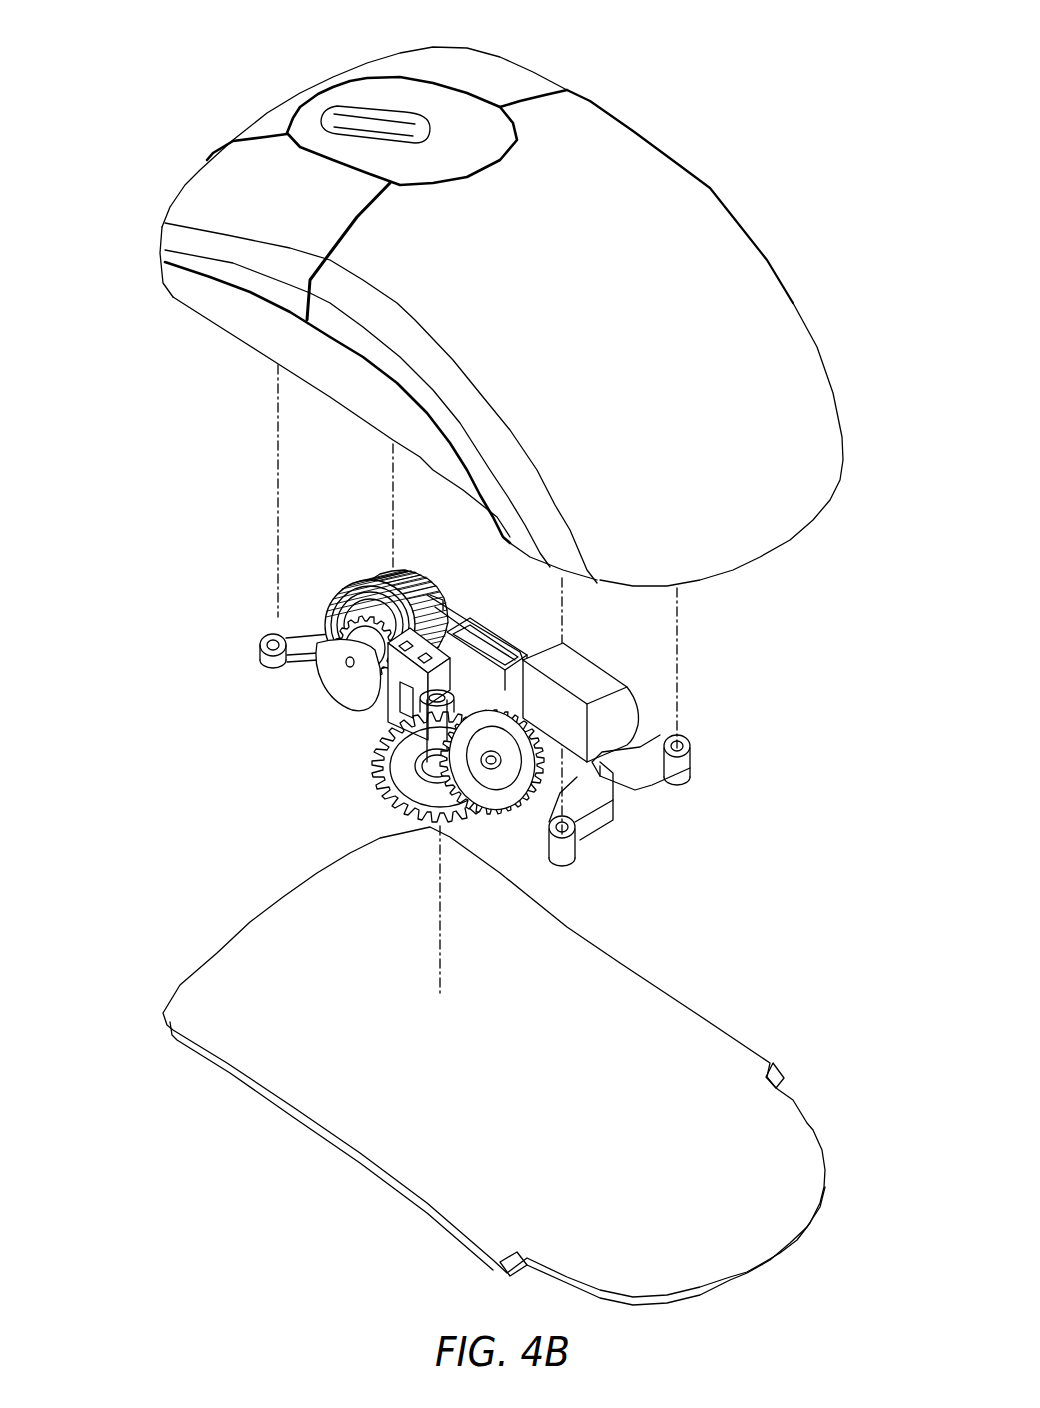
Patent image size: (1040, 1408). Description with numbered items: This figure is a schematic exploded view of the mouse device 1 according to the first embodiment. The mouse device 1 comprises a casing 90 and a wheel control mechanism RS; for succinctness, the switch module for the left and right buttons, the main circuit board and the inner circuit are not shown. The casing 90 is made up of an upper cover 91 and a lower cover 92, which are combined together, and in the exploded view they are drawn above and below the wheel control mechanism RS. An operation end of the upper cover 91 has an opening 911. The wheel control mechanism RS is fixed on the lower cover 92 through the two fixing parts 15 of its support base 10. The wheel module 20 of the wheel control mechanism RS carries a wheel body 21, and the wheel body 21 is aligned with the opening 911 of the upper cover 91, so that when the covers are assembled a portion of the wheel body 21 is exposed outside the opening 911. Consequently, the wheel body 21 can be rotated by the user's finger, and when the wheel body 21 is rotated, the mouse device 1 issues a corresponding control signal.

The mouse device 1 is at (62, 23).
The support base 10 is at (459, 694).
The fixing parts 15 is at (640, 800).
The wheel module 20 is at (337, 620).
The wheel body 21 is at (386, 585).
The casing 90 is at (145, 388).
The upper cover 91 is at (501, 316).
The opening 911 is at (440, 84).
The lower cover 92 is at (494, 1066).
The wheel control mechanism RS is at (634, 702).